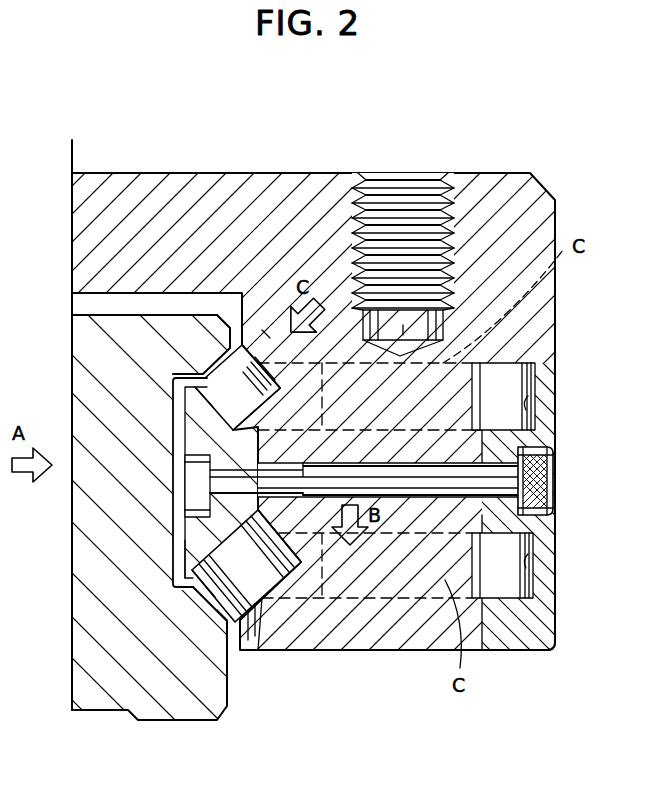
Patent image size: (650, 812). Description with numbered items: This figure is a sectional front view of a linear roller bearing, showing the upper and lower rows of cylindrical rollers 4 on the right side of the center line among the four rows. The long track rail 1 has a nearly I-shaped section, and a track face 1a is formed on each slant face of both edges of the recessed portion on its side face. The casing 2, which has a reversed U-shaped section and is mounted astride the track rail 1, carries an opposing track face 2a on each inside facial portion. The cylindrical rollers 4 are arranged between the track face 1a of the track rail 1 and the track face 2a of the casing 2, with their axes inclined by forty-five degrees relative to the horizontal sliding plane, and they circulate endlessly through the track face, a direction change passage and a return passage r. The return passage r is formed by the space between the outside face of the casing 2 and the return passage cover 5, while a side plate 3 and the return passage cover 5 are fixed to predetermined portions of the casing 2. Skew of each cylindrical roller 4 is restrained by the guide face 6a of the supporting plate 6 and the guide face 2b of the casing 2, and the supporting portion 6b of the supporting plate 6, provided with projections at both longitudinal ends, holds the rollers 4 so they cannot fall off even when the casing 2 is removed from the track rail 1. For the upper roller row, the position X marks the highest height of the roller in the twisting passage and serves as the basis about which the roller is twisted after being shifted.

The track rail 1 is at (97, 700).
The track face 1a is at (217, 362).
The casing 2 is at (216, 158).
The track face 2a is at (190, 472).
The guide face 2b is at (270, 350).
The side plate 3 is at (268, 630).
The cylindrical roller 4 is at (500, 373).
The return passage cover 5 is at (510, 638).
The supporting plate 6 is at (200, 525).
The guide face 6a is at (197, 557).
The supporting portion 6b is at (210, 424).
The position of the highest height of the cylindrical roller X is at (268, 335).
The return passage r is at (523, 400).